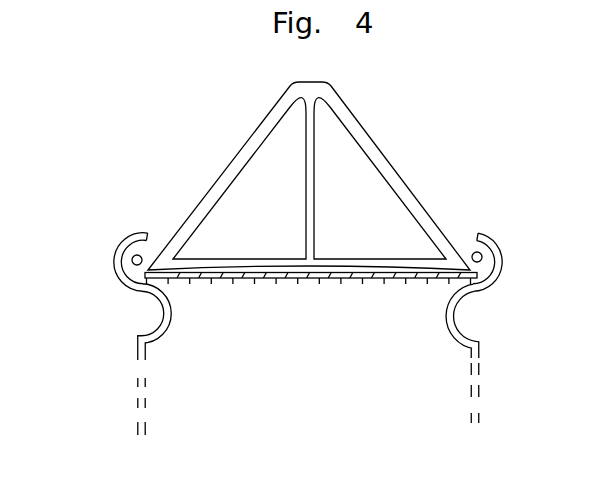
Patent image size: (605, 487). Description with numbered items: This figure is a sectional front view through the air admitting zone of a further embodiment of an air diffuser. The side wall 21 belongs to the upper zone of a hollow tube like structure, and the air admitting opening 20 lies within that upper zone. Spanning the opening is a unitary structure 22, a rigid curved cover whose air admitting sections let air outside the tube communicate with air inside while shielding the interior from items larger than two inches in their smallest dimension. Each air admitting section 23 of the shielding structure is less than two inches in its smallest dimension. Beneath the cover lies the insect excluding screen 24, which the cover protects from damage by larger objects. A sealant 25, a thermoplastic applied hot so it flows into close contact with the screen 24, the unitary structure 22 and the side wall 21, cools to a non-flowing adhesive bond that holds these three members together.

The air admitting opening 20 is at (102, 307).
The side wall 21 is at (116, 248).
The unitary structure 22 is at (330, 169).
The air admitting section 23 is at (352, 168).
The insect excluding screen 24 is at (433, 278).
The sealant 25 is at (470, 252).